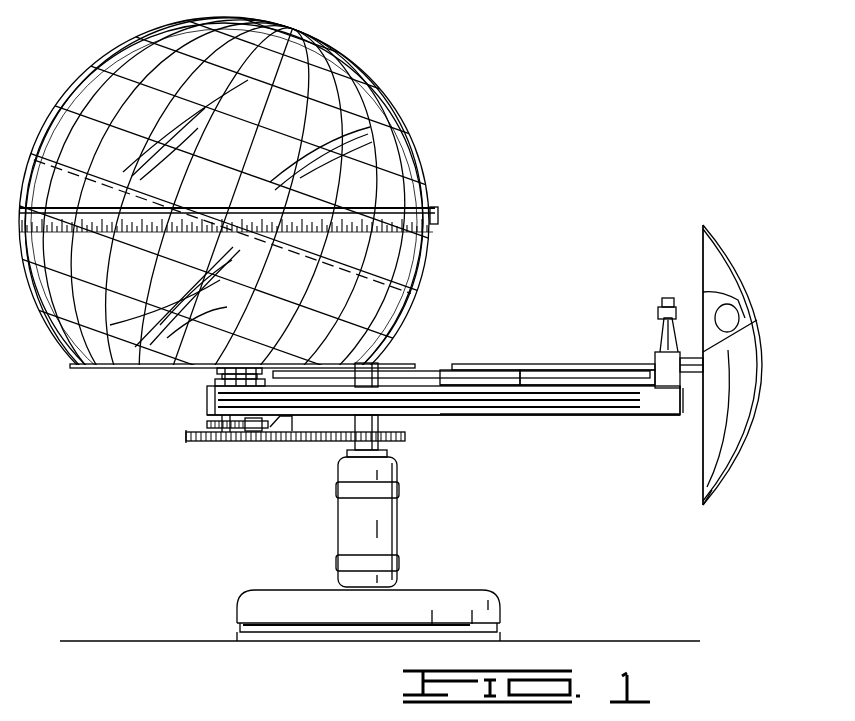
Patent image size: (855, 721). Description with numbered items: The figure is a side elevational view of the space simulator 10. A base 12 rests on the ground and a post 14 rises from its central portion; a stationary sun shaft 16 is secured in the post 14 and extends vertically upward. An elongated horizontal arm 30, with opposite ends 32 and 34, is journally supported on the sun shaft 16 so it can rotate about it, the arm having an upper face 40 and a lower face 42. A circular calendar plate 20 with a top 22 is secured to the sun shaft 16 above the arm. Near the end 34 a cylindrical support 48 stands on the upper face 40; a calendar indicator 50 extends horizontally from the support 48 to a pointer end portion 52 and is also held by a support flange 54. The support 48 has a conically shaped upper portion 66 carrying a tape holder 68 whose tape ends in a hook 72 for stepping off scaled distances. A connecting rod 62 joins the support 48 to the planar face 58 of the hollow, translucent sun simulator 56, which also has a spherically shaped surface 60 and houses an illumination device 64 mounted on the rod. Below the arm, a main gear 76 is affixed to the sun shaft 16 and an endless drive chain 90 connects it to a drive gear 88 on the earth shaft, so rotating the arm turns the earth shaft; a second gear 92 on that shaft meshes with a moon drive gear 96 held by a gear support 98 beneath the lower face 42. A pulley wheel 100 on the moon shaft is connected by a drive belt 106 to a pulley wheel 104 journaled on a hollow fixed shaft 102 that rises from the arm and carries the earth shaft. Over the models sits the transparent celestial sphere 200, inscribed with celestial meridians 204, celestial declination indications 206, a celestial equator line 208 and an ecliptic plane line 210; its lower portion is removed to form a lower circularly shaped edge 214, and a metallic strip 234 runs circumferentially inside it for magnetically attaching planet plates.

The space simulator 10 is at (438, 237).
The base 12 is at (435, 597).
The post 14 is at (383, 522).
The sun shaft 16 is at (374, 420).
The calendar plate 20 is at (420, 380).
The top 22 is at (400, 370).
The horizontal arm 30 is at (585, 415).
The end 32 is at (205, 400).
The end 34 is at (690, 403).
The upper face 40 is at (583, 388).
The lower face 42 is at (557, 415).
The support 48 is at (662, 377).
The calendar indicator 50 is at (508, 367).
The pointer end portion 52 is at (463, 368).
The support flange 54 is at (522, 378).
The sun simulator 56 is at (716, 497).
The planar face 58 is at (703, 467).
The spherically shaped surface 60 is at (735, 425).
The connecting rod 62 is at (702, 357).
The illumination device 64 is at (738, 313).
The upper portion 66 is at (662, 342).
The tape holder 68 is at (662, 305).
The hook 72 is at (657, 316).
The main gear 76 is at (402, 447).
The drive gear 88 is at (187, 442).
The endless drive chain 90 is at (292, 443).
The second gear 92 is at (207, 423).
The moon drive gear 96 is at (233, 445).
The gear support 98 is at (290, 445).
The pulley wheel 100 is at (258, 372).
The fixed shaft 102 is at (217, 369).
The pulley wheel 104 is at (210, 380).
The drive belt 106 is at (242, 362).
The celestial sphere 200 is at (408, 118).
The celestial meridians 204 is at (388, 290).
The celestial declination indications 206 is at (330, 97).
The celestial equator 208 is at (420, 290).
The ecliptic plane 210 is at (385, 220).
The lower circularly shaped edge 214 is at (92, 367).
The strip 234 is at (196, 212).